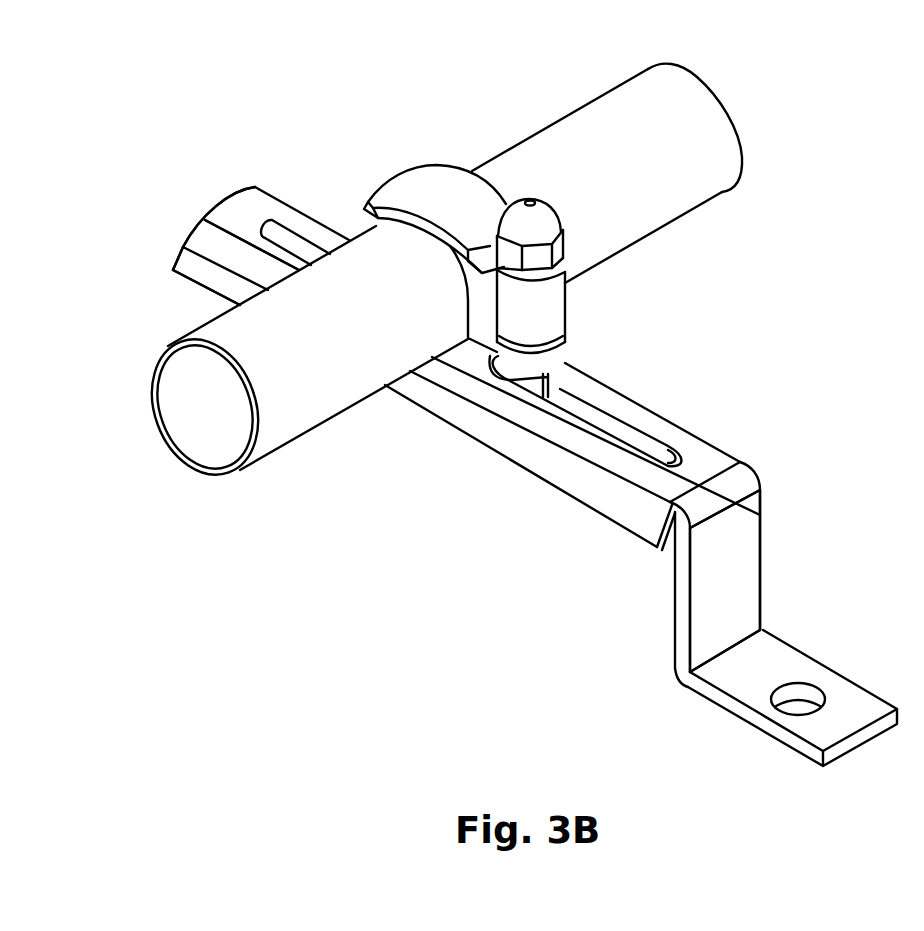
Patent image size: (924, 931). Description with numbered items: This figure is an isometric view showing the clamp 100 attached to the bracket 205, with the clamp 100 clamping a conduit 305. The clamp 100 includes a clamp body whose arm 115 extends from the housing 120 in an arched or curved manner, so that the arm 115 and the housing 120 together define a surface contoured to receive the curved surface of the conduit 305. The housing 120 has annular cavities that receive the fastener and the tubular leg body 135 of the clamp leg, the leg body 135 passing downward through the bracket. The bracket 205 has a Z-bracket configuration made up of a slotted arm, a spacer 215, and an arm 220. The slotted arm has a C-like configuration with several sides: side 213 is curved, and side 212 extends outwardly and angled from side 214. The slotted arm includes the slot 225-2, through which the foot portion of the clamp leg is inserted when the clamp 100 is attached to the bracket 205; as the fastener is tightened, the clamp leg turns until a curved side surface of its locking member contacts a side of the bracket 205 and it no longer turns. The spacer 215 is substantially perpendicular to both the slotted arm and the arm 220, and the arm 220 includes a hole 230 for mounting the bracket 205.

The clamp 100 is at (412, 155).
The arm 115 is at (457, 196).
The housing 120 is at (541, 314).
The leg body 135 is at (557, 357).
The bracket 205 is at (614, 539).
The side 212 is at (190, 267).
The side 213 is at (202, 230).
The side 214 is at (237, 217).
The spacer 215 is at (263, 185).
The arm 220 is at (780, 667).
The slot 225-2 is at (594, 421).
The hole 230 is at (802, 703).
The conduit 305 is at (680, 124).